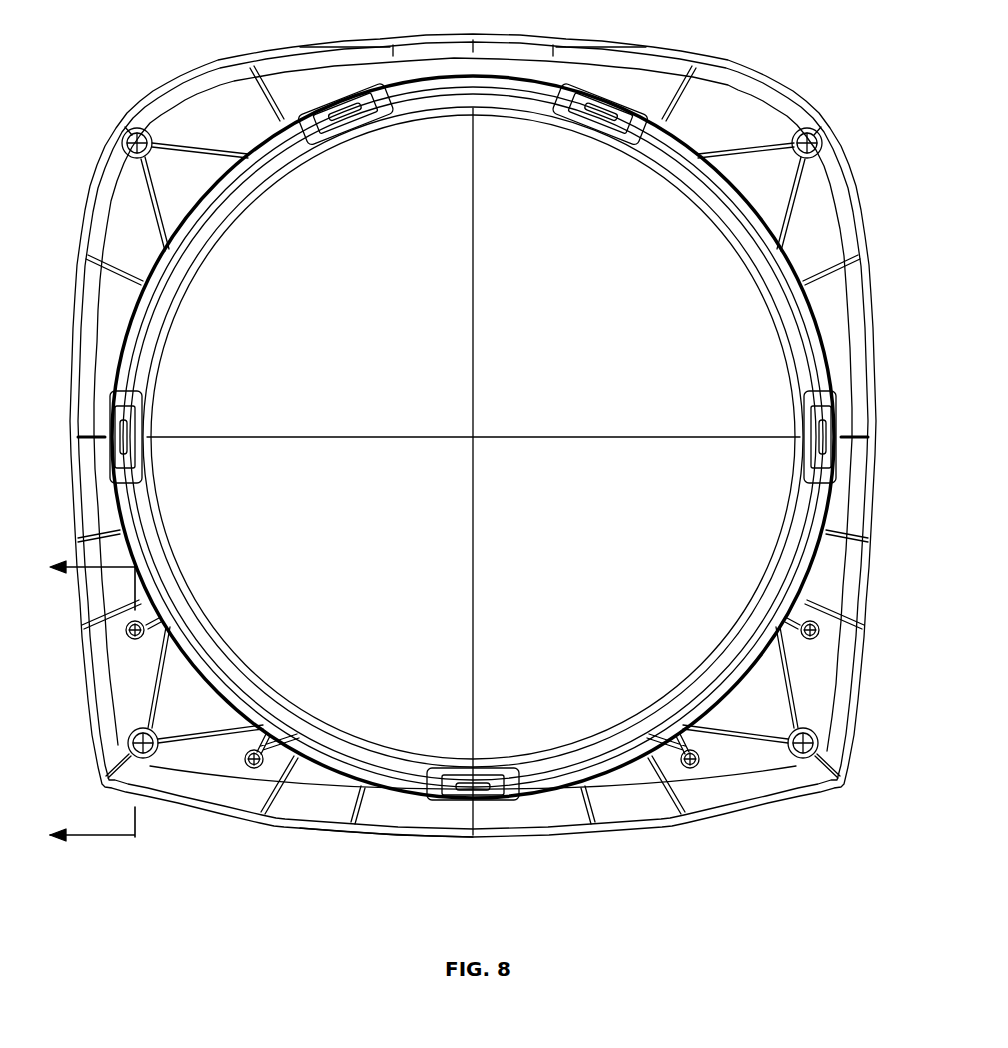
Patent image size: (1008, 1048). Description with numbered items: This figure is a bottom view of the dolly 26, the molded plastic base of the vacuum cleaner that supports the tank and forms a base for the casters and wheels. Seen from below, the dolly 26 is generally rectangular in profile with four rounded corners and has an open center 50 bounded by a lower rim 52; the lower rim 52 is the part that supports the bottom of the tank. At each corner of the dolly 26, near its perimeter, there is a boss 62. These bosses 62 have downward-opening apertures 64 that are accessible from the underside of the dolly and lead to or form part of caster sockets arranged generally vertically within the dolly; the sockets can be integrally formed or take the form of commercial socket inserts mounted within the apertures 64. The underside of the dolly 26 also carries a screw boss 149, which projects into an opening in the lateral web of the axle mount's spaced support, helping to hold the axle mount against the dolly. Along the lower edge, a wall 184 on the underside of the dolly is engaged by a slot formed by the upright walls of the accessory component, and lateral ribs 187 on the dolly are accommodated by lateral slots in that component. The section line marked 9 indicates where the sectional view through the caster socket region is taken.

The dolly 26 is at (732, 86).
The open center 50 is at (722, 235).
The lower rim 52 is at (778, 333).
The boss 62 is at (138, 128).
The downward-opening apertures 64 is at (155, 153).
The screw boss 149 is at (147, 627).
The wall 184 is at (365, 832).
The lateral ribs 187 is at (474, 813).
The section line 9- 9 is at (96, 704).